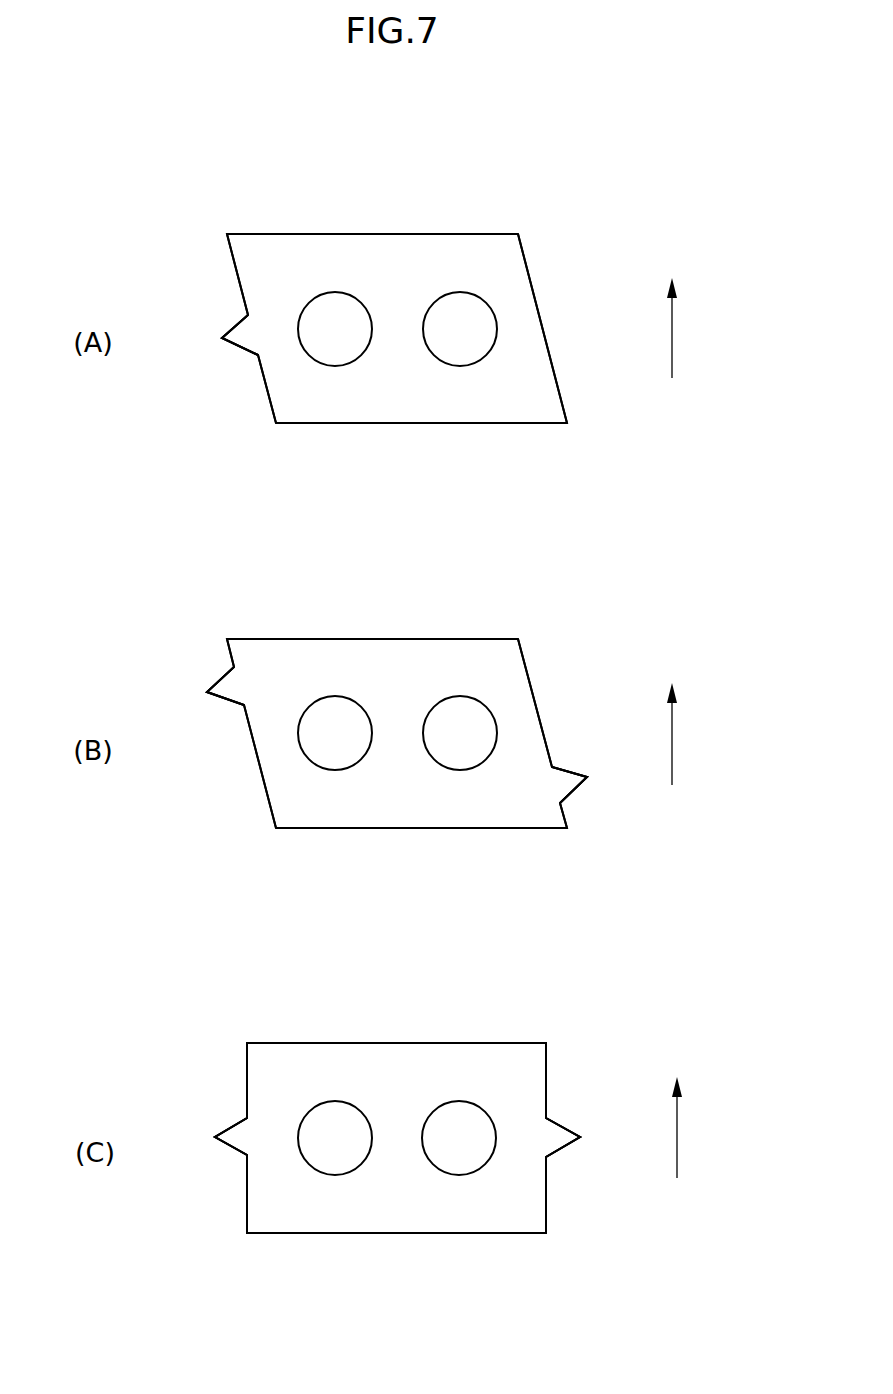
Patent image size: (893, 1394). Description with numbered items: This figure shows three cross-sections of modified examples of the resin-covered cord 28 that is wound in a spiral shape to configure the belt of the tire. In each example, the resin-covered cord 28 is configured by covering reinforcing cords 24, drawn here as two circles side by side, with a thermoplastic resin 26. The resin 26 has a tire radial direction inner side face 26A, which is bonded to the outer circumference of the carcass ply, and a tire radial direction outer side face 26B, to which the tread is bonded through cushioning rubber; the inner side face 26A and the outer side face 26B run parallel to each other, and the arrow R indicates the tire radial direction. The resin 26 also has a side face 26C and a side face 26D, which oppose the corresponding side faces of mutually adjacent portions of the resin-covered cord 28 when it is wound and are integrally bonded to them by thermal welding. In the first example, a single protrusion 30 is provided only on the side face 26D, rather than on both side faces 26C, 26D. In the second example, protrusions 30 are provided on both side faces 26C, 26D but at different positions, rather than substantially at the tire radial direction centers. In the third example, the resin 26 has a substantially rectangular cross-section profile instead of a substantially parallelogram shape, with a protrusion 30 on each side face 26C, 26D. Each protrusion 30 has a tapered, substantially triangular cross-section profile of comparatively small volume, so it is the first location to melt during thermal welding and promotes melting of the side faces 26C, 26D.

The reinforcing cords 24 is at (362, 298).
The thermoplastic resin 26 is at (286, 230).
The tire radial direction inner side face 26A is at (428, 423).
The tire radial direction outer side face 26B is at (433, 234).
The side face 26C is at (540, 318).
The side face 26D is at (237, 273).
The resin-covered cord 28 is at (351, 203).
The protrusion 30 is at (240, 350).
The direction R is at (672, 327).